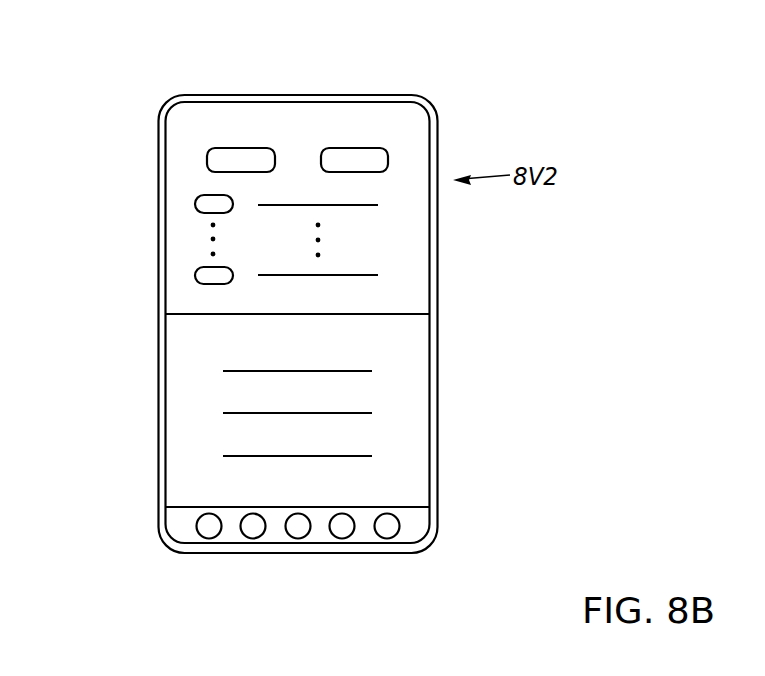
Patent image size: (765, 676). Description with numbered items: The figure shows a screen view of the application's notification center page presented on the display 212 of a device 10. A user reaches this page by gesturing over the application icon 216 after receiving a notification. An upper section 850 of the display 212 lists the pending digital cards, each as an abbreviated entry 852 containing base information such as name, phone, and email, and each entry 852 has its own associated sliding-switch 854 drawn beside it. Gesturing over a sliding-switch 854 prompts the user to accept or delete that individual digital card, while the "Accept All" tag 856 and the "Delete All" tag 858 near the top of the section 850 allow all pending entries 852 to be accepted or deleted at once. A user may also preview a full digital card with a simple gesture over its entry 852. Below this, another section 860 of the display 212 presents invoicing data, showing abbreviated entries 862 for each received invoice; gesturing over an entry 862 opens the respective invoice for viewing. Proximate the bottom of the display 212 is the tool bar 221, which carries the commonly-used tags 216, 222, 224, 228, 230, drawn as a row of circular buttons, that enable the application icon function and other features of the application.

The electronic device 10 is at (229, 95).
The display 212 is at (178, 133).
The "Accept All" tag 856 is at (207, 160).
The "Delete All" tag 858 is at (389, 160).
The sliding-switch 854 is at (207, 205).
The abbreviated entry 852 is at (350, 275).
The section 850 is at (414, 293).
The section 860 is at (418, 362).
The abbreviated entries 862 is at (240, 392).
The tool bar 221 is at (176, 522).
The application icon 216 is at (207, 532).
The tag 222 is at (253, 530).
The tag 224 is at (300, 530).
The tag 228 is at (345, 530).
The tag 230 is at (390, 526).